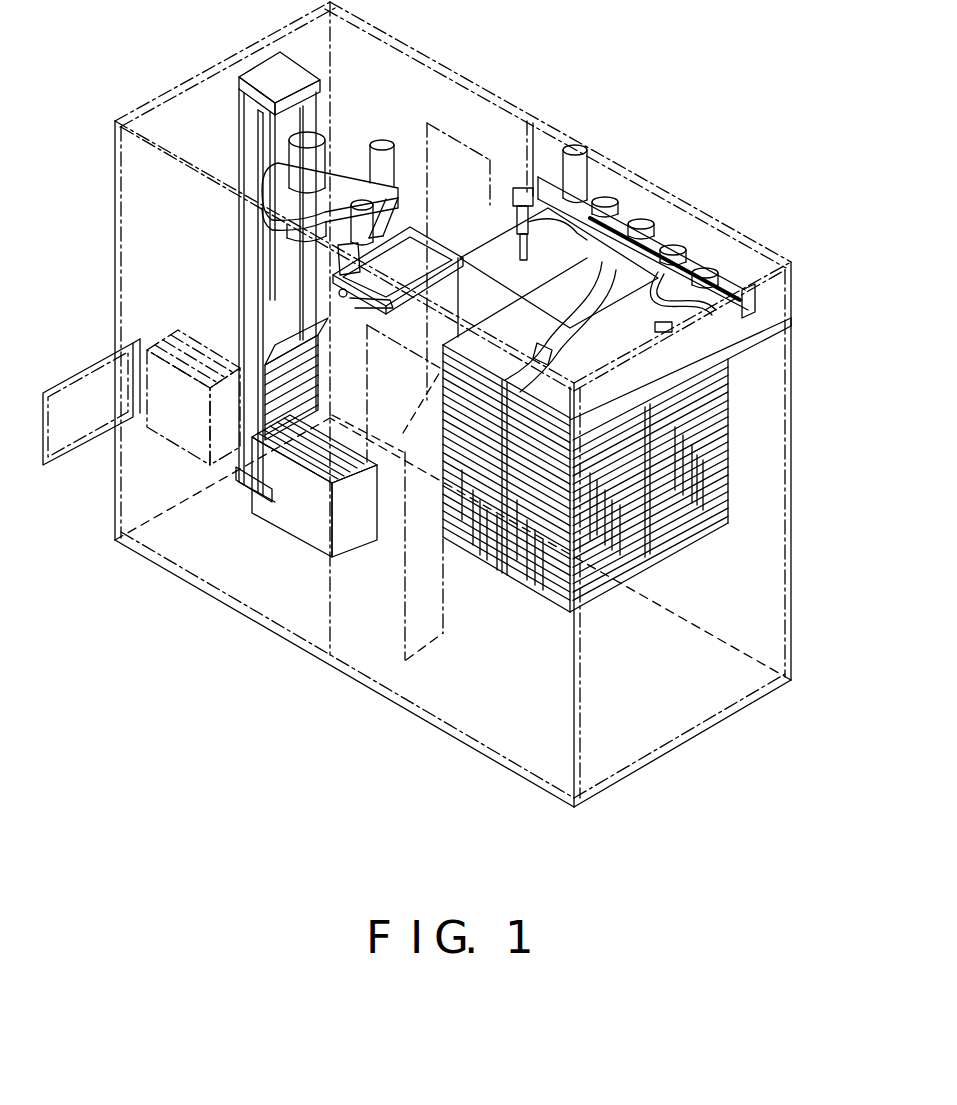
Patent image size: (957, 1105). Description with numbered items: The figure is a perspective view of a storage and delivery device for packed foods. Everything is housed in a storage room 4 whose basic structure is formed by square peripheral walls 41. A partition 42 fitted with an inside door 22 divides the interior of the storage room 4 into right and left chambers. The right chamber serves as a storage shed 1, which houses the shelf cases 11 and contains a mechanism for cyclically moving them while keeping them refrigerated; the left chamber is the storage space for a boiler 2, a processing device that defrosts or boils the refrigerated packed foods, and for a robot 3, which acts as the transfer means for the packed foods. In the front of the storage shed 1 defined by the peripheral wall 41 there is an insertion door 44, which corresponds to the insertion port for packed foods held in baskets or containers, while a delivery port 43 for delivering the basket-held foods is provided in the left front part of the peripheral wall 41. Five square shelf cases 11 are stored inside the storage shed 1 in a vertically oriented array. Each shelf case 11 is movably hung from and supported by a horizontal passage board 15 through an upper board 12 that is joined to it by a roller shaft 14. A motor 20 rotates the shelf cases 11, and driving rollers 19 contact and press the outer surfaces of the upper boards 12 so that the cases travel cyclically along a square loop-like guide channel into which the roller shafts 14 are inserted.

The storage shed 1 is at (653, 720).
The boiler 2 is at (286, 535).
The robot 3 is at (238, 158).
The storage room 4 is at (157, 537).
The shelf case 11 is at (483, 255).
The upper board 12 is at (540, 200).
The roller shaft 14 is at (510, 243).
The horizontal passage board 15 is at (748, 313).
The driving roller 19 is at (613, 207).
The motor 20 is at (595, 156).
The inside door 22 is at (420, 180).
The peripheral wall 41 is at (513, 770).
The partition 42 is at (513, 125).
The delivery port 43 is at (93, 362).
The insertion door 44 is at (403, 606).